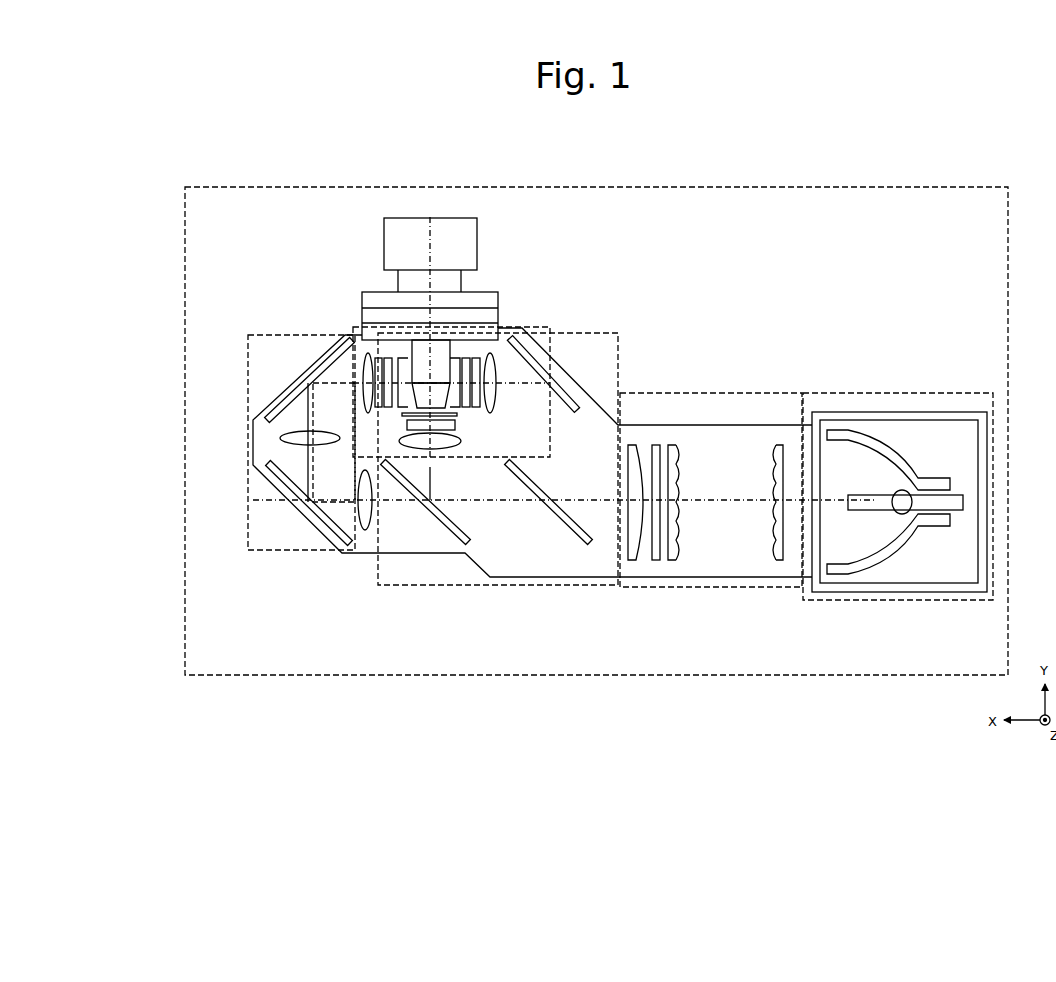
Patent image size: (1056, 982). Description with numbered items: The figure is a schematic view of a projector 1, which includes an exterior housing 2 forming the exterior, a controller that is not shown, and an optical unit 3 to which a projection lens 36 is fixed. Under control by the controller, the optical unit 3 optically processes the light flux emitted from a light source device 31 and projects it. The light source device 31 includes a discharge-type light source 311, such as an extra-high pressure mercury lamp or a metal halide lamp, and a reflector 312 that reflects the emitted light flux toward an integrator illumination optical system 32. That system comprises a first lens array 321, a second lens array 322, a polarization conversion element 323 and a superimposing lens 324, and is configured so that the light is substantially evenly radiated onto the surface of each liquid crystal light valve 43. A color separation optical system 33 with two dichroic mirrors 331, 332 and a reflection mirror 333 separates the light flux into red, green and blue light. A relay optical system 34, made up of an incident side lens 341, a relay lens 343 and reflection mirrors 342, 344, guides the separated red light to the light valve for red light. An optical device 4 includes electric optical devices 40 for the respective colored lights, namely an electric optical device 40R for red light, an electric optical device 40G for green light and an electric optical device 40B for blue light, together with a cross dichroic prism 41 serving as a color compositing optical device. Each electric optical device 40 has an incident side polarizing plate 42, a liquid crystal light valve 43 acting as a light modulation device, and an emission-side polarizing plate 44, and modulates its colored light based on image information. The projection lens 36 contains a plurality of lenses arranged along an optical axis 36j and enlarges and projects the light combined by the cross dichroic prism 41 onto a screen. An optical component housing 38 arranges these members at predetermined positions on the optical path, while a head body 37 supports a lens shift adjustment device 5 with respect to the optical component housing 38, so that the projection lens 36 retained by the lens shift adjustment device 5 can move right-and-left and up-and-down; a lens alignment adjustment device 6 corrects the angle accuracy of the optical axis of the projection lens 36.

The projector 1 is at (648, 176).
The exterior housing 2 is at (185, 308).
The optical unit 3 is at (606, 247).
The optical device 4 is at (464, 423).
The lens shift adjustment device 5 is at (437, 340).
The lens alignment adjustment device 6 is at (478, 221).
The light source device 31 is at (826, 600).
The integrator illumination optical system 32 is at (650, 590).
The color separation optical system 33 is at (517, 590).
The relay optical system 34 is at (248, 452).
The projection lens 36 is at (392, 247).
The optical axis 36j is at (427, 228).
The head body 37 is at (458, 340).
The optical component housing 38 is at (440, 555).
The electric optical device 40 is at (475, 396).
The electric optical device for R-light 40R is at (382, 419).
The electric optical device for G-light 40G is at (484, 433).
The electric optical device for B-light 40B is at (479, 413).
The cross dichroic prism 41 is at (403, 358).
The incident side polarizing plate 42 is at (362, 322).
The liquid crystal light valve 43 is at (362, 300).
The emission-side polarizing plate 44 is at (458, 360).
The light source 311 is at (876, 546).
The reflector 312 is at (903, 512).
The first lens array 321 is at (777, 445).
The second lens array 322 is at (673, 445).
The polarization conversion element 323 is at (656, 445).
The superimposing lens 324 is at (634, 445).
The dichroic mirror 331 is at (566, 530).
The dichroic mirror 332 is at (445, 530).
The reflection mirror 333 is at (571, 383).
The incident side lens 341 is at (363, 531).
The reflection mirror 342 is at (278, 482).
The relay lens 343 is at (318, 443).
The reflection mirror 344 is at (297, 392).